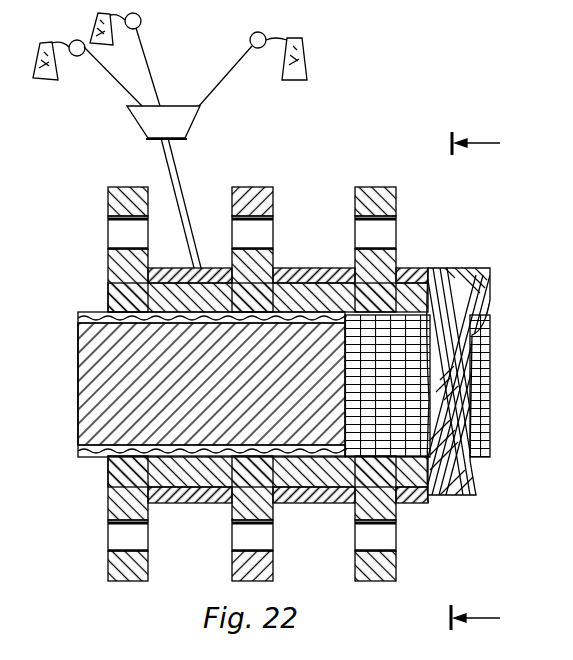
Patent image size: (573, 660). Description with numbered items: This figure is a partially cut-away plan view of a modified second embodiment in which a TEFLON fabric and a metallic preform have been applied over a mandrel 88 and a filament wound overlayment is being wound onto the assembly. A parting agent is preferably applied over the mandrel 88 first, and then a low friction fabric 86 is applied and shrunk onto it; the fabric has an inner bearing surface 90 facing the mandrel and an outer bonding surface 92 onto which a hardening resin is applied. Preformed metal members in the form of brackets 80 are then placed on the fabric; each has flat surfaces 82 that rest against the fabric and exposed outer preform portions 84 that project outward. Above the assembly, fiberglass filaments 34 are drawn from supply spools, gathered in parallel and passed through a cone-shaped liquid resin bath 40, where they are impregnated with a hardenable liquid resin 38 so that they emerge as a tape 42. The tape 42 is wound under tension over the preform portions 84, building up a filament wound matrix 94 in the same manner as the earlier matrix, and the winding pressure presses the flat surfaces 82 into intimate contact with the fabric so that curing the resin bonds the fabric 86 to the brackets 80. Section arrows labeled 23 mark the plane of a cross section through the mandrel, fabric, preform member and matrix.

The section line 23- 23 is at (475, 381).
The fiberglass filaments 34 is at (150, 33).
The hardenable liquid resin 38 is at (178, 107).
The liquid resin bath 40 is at (127, 107).
The tape 42 is at (160, 148).
The brackets 80 is at (353, 192).
The flat surfaces 82 is at (250, 368).
The exposed outer preform portions 84 is at (108, 254).
The low friction fabric 86 is at (78, 313).
The mandrel 88 is at (88, 350).
The inner bearing surface 90 is at (100, 440).
The outer bonding surface 92 is at (118, 457).
The filament wound matrix 94 is at (474, 268).